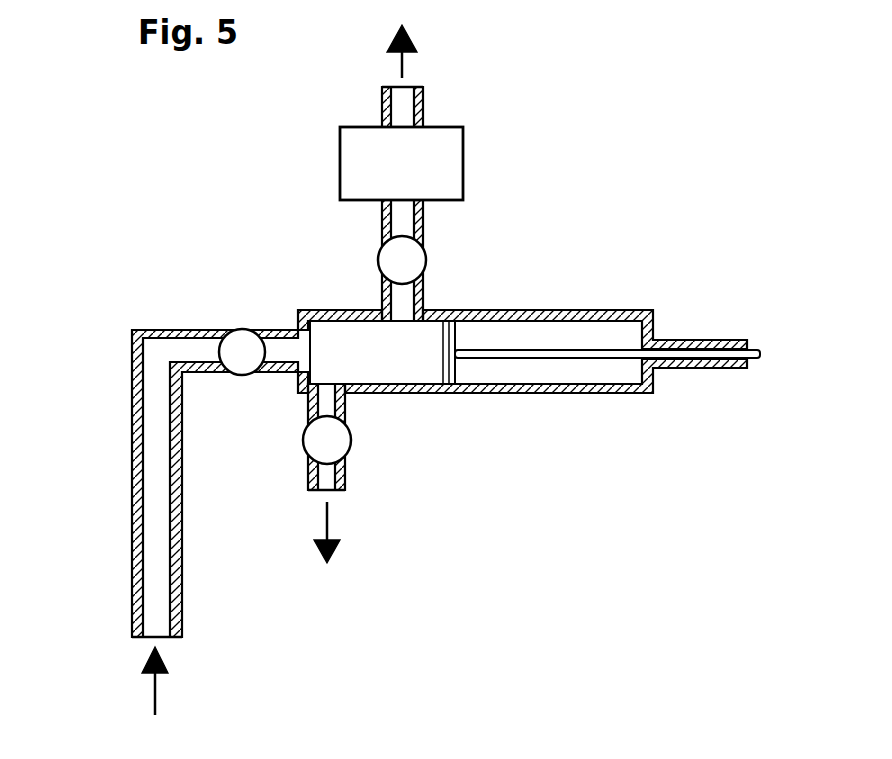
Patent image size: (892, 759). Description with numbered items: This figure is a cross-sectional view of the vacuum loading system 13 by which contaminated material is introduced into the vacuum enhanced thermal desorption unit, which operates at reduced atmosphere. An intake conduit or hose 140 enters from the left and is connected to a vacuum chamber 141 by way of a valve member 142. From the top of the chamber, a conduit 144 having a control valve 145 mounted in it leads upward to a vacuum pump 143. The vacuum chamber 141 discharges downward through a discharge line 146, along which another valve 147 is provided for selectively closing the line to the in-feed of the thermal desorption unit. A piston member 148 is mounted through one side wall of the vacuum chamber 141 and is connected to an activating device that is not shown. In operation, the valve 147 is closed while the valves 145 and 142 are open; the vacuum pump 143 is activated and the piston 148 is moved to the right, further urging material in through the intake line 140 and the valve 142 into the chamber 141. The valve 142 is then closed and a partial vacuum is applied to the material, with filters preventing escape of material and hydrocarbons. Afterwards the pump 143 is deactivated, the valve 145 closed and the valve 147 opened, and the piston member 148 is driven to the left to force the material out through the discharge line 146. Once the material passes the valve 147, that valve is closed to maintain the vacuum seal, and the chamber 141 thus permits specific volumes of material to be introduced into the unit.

The vacuum loading system 13 is at (265, 218).
The intake conduit 140 is at (132, 505).
The vacuum chamber 141 is at (477, 394).
The valve member 142 is at (250, 328).
The vacuum pump 143 is at (463, 163).
The conduit 144 is at (423, 225).
The control valve 145 is at (380, 256).
The discharge line 146 is at (345, 482).
The valve 147 is at (303, 447).
The piston member 148 is at (606, 350).